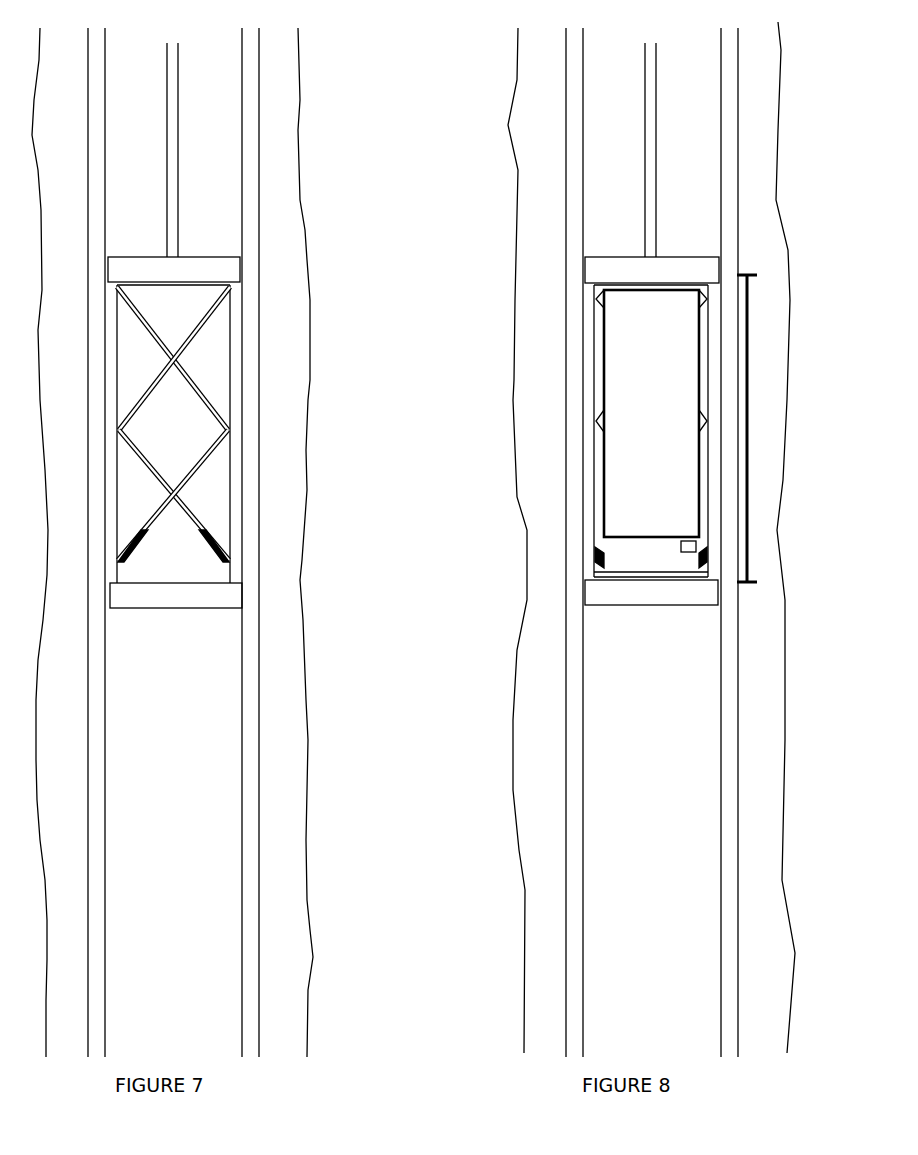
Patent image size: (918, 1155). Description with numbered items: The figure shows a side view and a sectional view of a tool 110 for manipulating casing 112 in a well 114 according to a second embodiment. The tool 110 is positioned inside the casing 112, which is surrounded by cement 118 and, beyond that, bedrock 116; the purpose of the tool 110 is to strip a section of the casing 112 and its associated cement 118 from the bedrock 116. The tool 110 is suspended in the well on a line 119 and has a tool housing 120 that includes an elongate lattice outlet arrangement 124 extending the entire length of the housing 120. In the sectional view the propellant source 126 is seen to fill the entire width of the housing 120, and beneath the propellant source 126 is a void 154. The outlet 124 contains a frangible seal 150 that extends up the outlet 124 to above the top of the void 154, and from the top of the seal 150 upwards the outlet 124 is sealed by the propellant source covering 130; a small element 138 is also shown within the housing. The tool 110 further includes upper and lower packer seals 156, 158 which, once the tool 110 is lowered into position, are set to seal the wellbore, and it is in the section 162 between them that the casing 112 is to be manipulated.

In FIG. 7, the tool 110 is at (222, 230).
In FIG. 8, the tool 110 is at (600, 240).
In FIG. 7, the casing 112 is at (250, 797).
In FIG. 8, the casing 112 is at (570, 798).
In FIG. 7, the well 114 is at (210, 892).
In FIG. 8, the well 114 is at (617, 893).
In FIG. 7, the bedrock 116 is at (330, 899).
In FIG. 8, the bedrock 116 is at (477, 902).
In FIG. 7, the cement 118 is at (283, 967).
In FIG. 8, the cement 118 is at (540, 975).
In FIG. 7, the conveyance rod 119 is at (172, 165).
In FIG. 8, the conveyance rod 119 is at (645, 172).
In FIG. 7, the tool housing 120 is at (222, 363).
In FIG. 8, the tool housing 120 is at (597, 367).
In FIG. 7, the outlet arrangement 124 is at (192, 473).
In FIG. 8, the outlet arrangement 124 is at (593, 422).
In FIG. 8, the propellant source 126 is at (640, 410).
In FIG. 8, the propellant source covering 130 is at (593, 333).
In FIG. 8, the sensor 138 is at (686, 552).
In FIG. 7, the frangible seal 150 is at (227, 550).
In FIG. 8, the frangible seal 150 is at (593, 555).
In FIG. 8, the void 154 is at (623, 558).
In FIG. 8, the upper packer seal 156 is at (593, 270).
In FIG. 8, the lower packer seal 158 is at (595, 595).
In FIG. 8, the section 162 is at (761, 428).